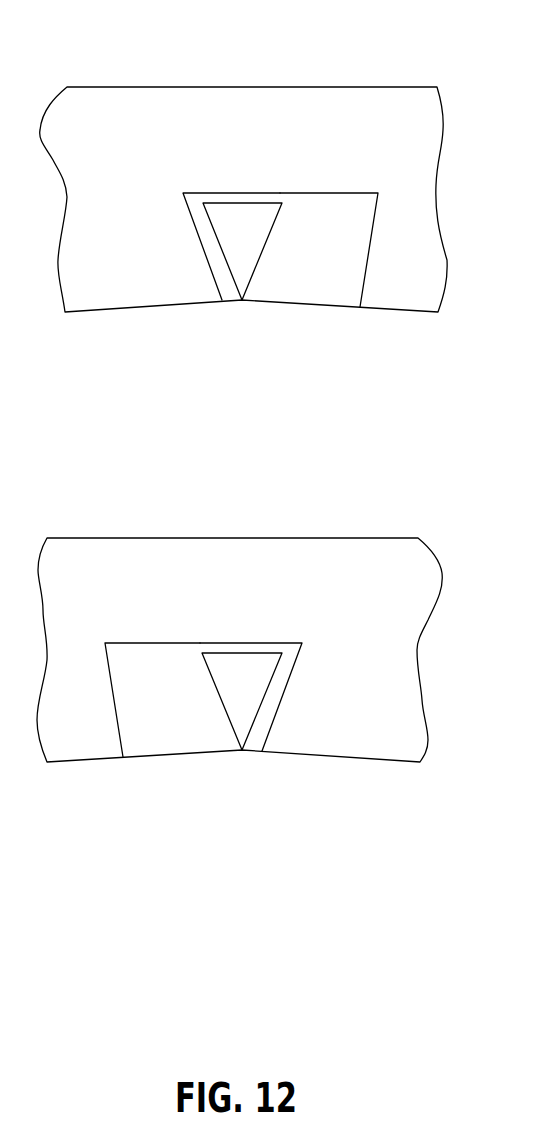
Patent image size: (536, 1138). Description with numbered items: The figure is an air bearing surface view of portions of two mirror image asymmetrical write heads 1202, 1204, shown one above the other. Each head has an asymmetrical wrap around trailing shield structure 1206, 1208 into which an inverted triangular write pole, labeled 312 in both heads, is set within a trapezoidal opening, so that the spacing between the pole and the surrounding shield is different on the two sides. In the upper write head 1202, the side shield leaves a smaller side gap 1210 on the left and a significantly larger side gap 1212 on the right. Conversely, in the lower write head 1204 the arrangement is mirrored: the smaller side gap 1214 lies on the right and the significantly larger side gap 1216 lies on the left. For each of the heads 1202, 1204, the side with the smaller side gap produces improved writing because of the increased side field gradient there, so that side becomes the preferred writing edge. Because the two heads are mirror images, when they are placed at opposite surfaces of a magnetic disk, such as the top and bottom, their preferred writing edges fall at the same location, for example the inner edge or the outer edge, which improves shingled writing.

The write head 1202 is at (340, 78).
The write head 1204 is at (284, 528).
The asymmetrical wrap around trailing shield structure 1206 is at (282, 136).
The asymmetrical wrap around trailing shield structure 1208 is at (282, 593).
The smaller side gap 1210 is at (209, 252).
The larger side gap 1212 is at (290, 249).
The smaller side gap 1214 is at (280, 688).
The larger side gap 1216 is at (187, 689).
The triangular blade/insert 312 is at (269, 218).